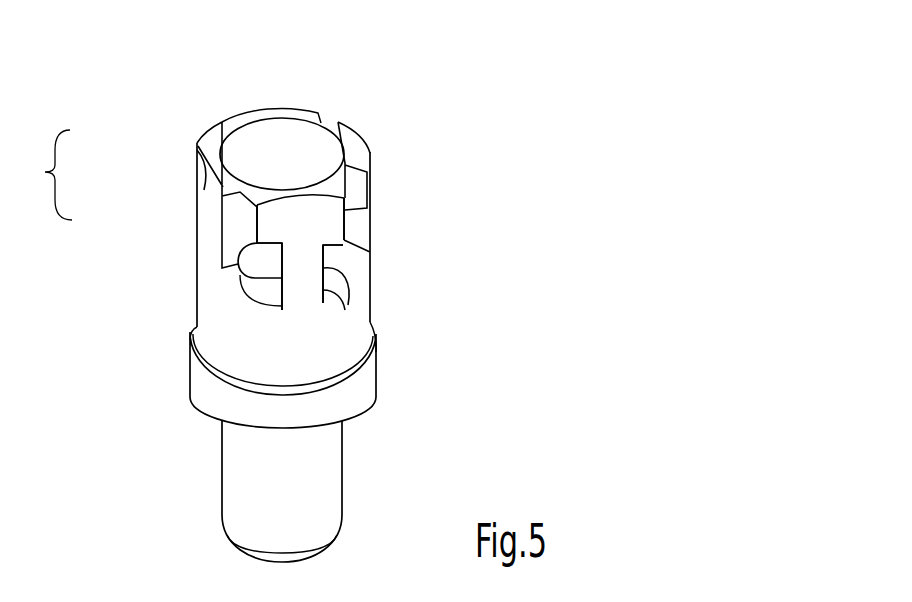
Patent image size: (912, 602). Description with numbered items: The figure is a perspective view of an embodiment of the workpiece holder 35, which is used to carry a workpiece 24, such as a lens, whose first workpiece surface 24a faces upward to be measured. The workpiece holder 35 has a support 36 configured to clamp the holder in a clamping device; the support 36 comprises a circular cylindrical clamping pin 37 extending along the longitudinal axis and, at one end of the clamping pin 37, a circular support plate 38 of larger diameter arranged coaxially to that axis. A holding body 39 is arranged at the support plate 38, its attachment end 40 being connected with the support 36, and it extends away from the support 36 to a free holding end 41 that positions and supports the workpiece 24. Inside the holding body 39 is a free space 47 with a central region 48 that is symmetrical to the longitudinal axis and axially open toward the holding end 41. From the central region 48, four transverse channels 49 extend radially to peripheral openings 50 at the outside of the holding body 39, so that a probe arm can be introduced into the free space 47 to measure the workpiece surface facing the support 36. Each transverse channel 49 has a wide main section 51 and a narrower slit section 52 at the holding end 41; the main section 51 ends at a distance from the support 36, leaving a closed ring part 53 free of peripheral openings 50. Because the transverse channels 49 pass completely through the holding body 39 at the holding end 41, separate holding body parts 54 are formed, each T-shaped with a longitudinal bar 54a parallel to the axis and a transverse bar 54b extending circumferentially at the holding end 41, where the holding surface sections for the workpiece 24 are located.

The workpiece 24 is at (313, 110).
The first workpiece surface 24a is at (252, 147).
The workpiece holder 35 is at (527, 157).
The support 36 is at (384, 365).
The clamping pin 37 is at (323, 480).
The support plate 38 is at (197, 397).
The holding body 39 is at (401, 237).
The attachment end 40 is at (372, 322).
The holding end 41 is at (383, 146).
The free space 47 is at (258, 260).
The central region 48 is at (247, 233).
The transverse channel 49 is at (337, 260).
The peripheral opening 50 is at (210, 258).
The main section 51 is at (346, 226).
The slit section 52 is at (222, 196).
The ring part 53 is at (290, 372).
The holding body part 54 is at (420, 448).
The longitudinal bar 54a is at (205, 216).
The transverse bar 54b is at (262, 112).